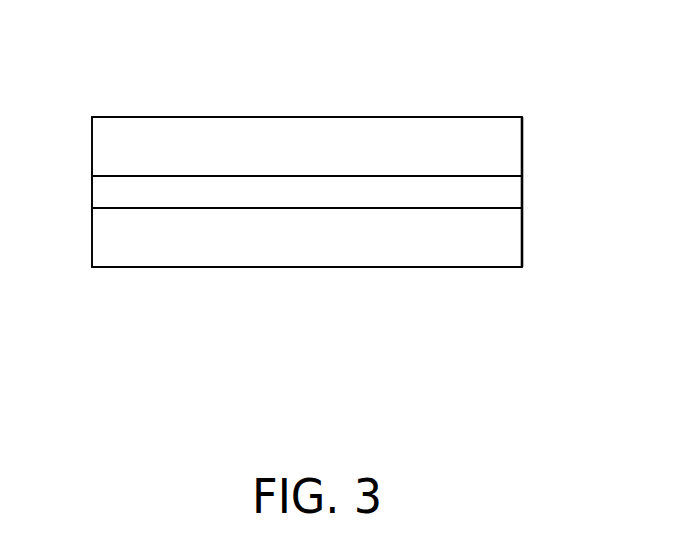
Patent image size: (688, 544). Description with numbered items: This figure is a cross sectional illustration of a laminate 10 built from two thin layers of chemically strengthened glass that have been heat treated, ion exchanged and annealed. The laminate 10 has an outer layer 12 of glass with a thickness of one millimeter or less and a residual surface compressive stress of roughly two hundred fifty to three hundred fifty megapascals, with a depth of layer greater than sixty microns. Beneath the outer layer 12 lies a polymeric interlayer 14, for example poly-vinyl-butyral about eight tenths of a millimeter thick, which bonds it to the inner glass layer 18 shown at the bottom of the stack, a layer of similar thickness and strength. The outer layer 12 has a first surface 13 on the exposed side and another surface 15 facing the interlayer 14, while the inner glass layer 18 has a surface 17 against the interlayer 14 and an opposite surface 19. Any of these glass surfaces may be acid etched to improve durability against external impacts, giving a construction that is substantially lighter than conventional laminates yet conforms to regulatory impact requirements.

The laminate 10 is at (158, 303).
The outer layer 12 is at (458, 136).
The first surface of the outer layer 13 is at (307, 117).
The polymeric interlayer 14 is at (500, 196).
The first surface of the outer layer 15 is at (182, 176).
The surface of the inner layer 17 is at (106, 208).
The second layer 18 is at (475, 243).
The surface of the inner layer 19 is at (312, 267).